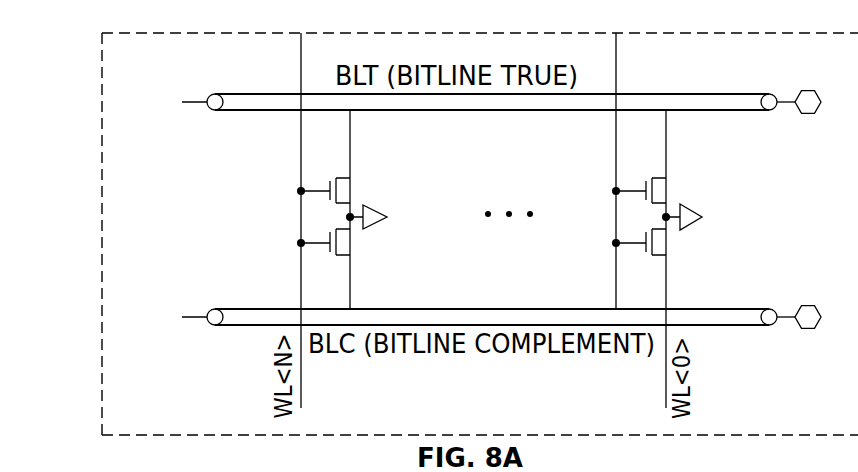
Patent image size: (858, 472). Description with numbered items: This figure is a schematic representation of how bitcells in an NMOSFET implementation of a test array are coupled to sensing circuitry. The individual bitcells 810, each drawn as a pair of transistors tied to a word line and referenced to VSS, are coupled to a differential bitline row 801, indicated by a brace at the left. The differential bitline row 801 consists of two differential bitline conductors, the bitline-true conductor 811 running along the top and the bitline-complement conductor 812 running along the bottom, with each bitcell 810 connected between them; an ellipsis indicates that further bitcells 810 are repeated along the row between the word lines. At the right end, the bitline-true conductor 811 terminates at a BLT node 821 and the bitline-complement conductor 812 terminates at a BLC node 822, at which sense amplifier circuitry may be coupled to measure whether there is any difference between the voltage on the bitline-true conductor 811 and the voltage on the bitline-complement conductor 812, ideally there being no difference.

The differential bitline row 801 is at (174, 93).
The bitcell 810 is at (386, 177).
The bitline-true conductor 811 is at (238, 113).
The bitline-complement conductor 812 is at (247, 307).
The BLT node 821 is at (811, 115).
The BLC node 822 is at (810, 330).